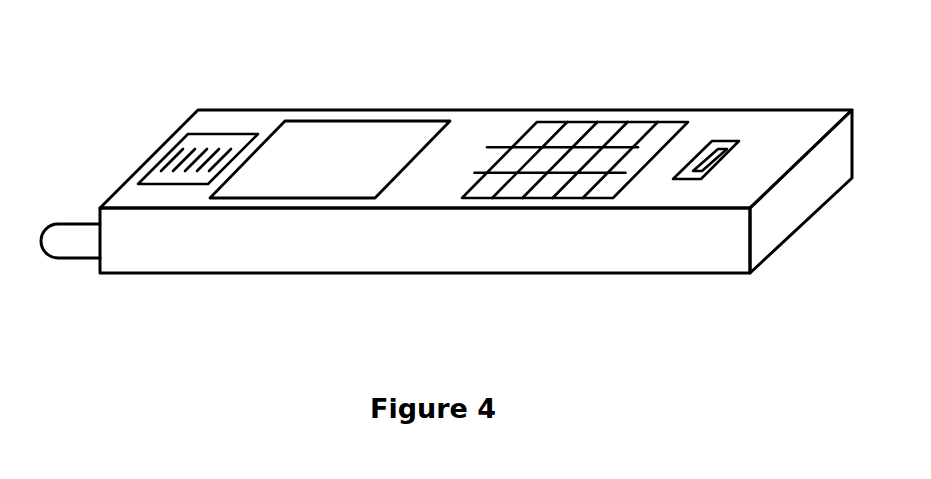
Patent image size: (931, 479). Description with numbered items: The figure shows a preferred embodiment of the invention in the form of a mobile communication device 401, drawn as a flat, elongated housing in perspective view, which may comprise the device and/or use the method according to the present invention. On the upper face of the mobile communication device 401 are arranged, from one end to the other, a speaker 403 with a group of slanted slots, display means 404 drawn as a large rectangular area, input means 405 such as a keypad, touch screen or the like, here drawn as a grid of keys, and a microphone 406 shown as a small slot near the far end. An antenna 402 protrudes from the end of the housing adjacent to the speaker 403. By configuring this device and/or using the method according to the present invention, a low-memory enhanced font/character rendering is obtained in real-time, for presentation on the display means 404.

The mobile communication device 401 is at (365, 275).
The antenna 402 is at (75, 260).
The speaker 403 is at (173, 147).
The display means 404 is at (350, 135).
The input means 405 is at (565, 135).
The microphone 406 is at (727, 138).